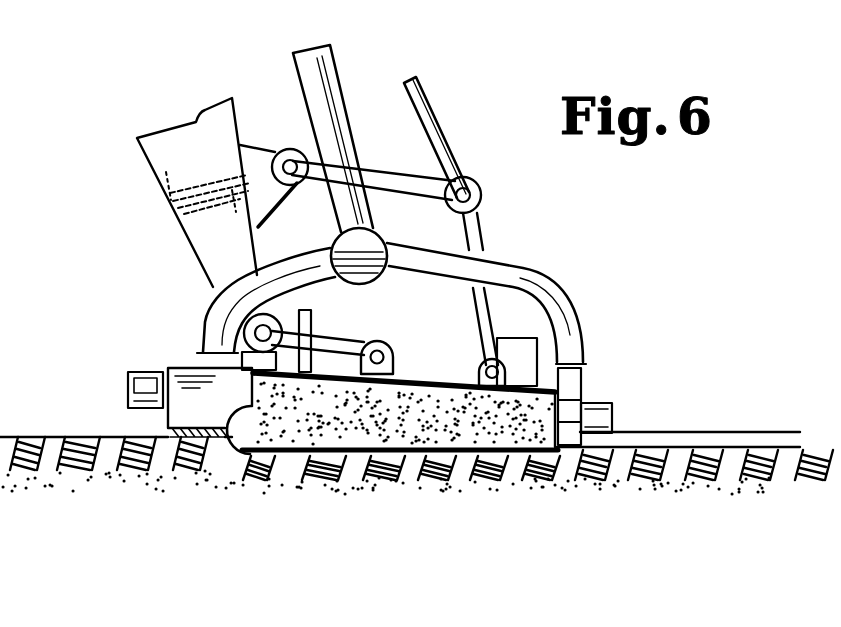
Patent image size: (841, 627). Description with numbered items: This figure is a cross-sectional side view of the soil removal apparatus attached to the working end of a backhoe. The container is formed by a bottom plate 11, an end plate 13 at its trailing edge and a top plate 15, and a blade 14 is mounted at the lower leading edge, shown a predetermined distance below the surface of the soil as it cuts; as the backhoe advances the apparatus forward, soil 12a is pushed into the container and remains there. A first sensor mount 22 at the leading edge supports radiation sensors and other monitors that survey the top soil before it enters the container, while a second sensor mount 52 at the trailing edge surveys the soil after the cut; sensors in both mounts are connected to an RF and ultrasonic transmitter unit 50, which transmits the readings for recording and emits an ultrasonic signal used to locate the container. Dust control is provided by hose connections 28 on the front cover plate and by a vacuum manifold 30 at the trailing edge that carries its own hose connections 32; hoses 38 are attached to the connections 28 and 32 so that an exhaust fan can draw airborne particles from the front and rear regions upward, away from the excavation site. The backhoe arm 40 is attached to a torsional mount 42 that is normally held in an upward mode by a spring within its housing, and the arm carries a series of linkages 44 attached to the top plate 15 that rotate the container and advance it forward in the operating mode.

The bottom plate 11 is at (512, 458).
The soil 12a is at (443, 420).
The end plate 13 is at (540, 457).
The blade 14 is at (240, 455).
The top plate 15 is at (428, 373).
The first sensor mount 22 is at (120, 375).
The hose connections 28 is at (197, 358).
The vacuum manifold 30 is at (620, 431).
The hose connections 32 is at (585, 378).
The hoses 38 is at (197, 315).
The backhoe arm 40 is at (163, 188).
The torsional mount 42 is at (333, 377).
The linkages 44 is at (447, 137).
The RF and ultrasonic transmitter unit 50 is at (530, 340).
The second sensor mount 52 is at (612, 413).